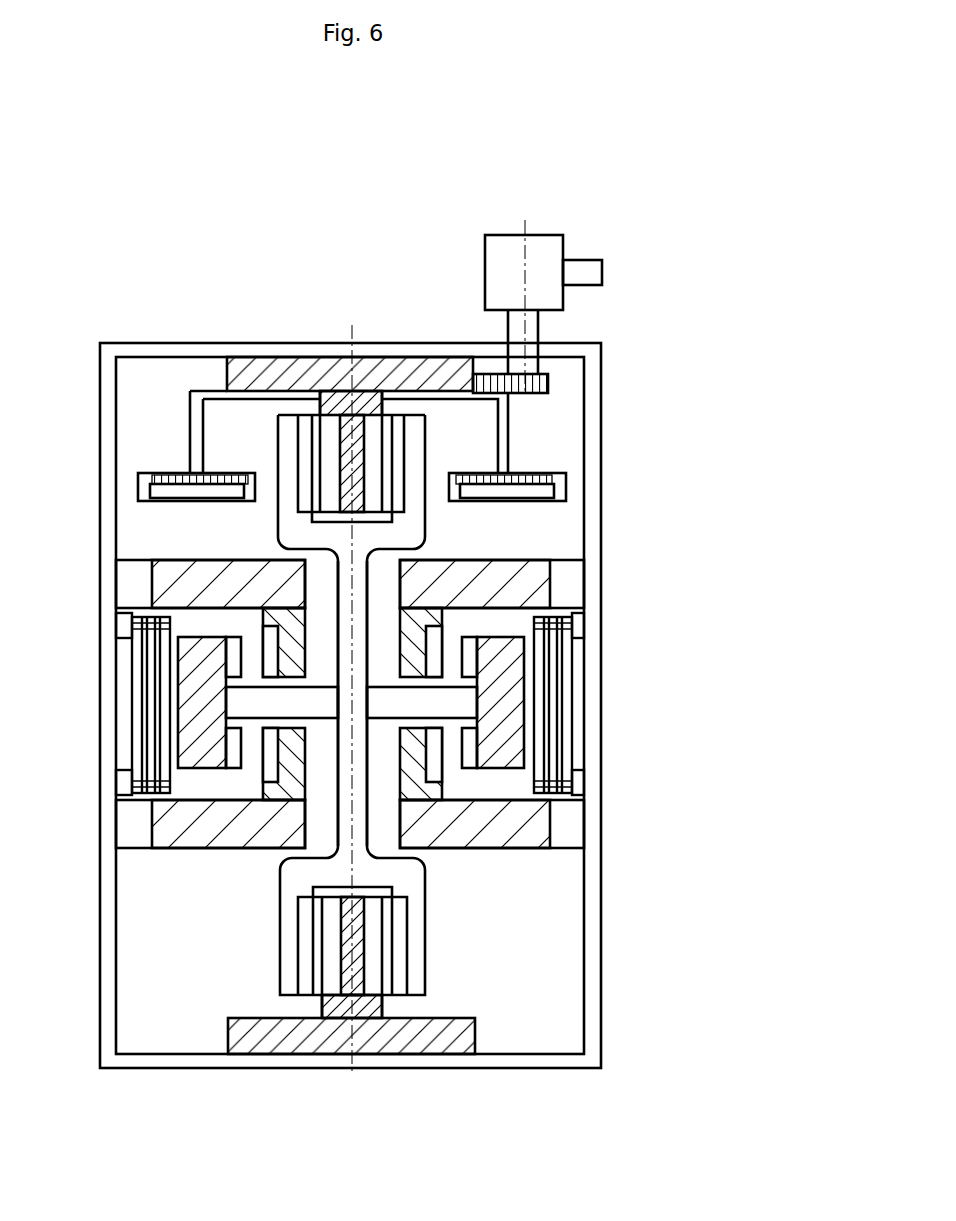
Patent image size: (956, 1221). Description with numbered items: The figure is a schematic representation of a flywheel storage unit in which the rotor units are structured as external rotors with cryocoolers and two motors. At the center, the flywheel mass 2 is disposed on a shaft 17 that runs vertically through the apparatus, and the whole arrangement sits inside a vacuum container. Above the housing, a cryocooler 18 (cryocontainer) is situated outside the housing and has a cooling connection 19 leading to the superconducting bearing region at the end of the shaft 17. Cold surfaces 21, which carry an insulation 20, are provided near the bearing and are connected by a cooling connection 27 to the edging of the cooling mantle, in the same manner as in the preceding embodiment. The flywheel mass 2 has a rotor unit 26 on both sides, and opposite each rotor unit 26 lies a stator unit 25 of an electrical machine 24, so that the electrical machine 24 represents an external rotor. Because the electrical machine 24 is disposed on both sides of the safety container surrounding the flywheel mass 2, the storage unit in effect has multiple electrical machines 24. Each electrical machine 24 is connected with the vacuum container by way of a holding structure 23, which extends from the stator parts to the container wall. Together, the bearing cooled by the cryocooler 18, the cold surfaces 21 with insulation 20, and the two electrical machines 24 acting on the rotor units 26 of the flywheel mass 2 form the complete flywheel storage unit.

The flywheel mass 2 is at (203, 700).
The shaft 17 is at (362, 702).
The cryocooler 18 is at (543, 235).
The cooling connection 19 is at (545, 382).
The insulation 20 is at (540, 475).
The cooling surfaces 21 is at (547, 491).
The holding structure 23 is at (575, 598).
The electrical machine 24 is at (532, 578).
The stator unit 25 is at (268, 643).
The rotor unit 26 is at (228, 653).
The cooling connection 27 is at (503, 433).